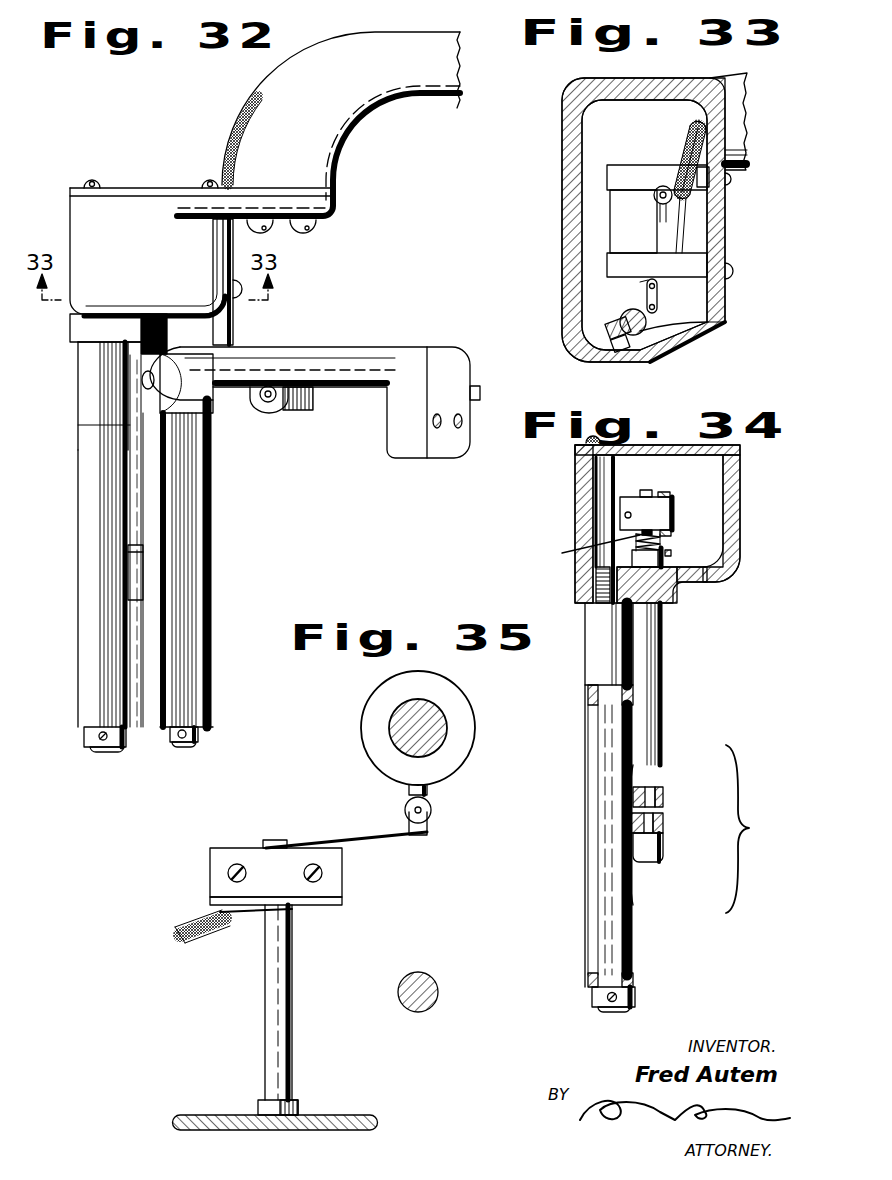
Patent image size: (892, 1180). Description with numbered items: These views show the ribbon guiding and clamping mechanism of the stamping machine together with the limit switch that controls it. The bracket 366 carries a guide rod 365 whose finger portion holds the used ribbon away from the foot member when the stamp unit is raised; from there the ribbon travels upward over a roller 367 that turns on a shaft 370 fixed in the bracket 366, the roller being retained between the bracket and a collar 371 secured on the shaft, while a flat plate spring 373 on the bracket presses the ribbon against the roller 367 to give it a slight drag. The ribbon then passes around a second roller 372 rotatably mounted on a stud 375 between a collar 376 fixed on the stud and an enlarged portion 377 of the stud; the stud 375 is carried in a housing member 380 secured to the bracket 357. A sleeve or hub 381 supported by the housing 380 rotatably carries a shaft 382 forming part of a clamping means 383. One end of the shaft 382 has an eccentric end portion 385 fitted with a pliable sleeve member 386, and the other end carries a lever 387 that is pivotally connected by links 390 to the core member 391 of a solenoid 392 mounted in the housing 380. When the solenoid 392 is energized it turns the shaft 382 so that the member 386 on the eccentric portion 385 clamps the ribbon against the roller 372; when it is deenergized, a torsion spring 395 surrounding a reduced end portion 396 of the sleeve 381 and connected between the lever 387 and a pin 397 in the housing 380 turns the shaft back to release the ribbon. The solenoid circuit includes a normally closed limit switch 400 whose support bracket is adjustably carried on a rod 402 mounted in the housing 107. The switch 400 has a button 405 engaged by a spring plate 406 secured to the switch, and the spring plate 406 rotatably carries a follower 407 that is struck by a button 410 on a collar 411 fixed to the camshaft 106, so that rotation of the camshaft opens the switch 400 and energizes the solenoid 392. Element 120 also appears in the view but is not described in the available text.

In FIG. 32, the bracket 357 is at (410, 96).
In FIG. 32, the housing member 380 is at (223, 308).
In FIG. 33, the housing member 380 is at (562, 176).
In FIG. 34, the housing member 380 is at (742, 537).
In FIG. 32, the bracket 366 is at (410, 350).
In FIG. 32, the guide rod 365 is at (349, 400).
In FIG. 32, the roller 367 is at (215, 587).
In FIG. 32, the enlarged portion of the stud 377 is at (90, 398).
In FIG. 34, the enlarged portion of the stud 377 is at (590, 673).
In FIG. 32, the roller 372 is at (88, 658).
In FIG. 34, the roller 372 is at (588, 888).
In FIG. 32, the sleeve or hub 381 is at (136, 497).
In FIG. 33, the sleeve or hub 381 is at (640, 335).
In FIG. 34, the sleeve or hub 381 is at (665, 726).
In FIG. 32, the sleeve member 386 is at (135, 568).
In FIG. 34, the sleeve member 386 is at (665, 850).
In FIG. 32, the collar 376 is at (90, 735).
In FIG. 34, the collar 376 is at (640, 997).
In FIG. 32, the stud 375 is at (98, 750).
In FIG. 34, the stud 375 is at (638, 900).
In FIG. 32, the flat plate spring 373 is at (153, 722).
In FIG. 32, the collar 371 is at (200, 735).
In FIG. 32, the shaft 370 is at (185, 745).
In FIG. 33, the solenoid 392 is at (617, 223).
In FIG. 33, the links 390 is at (660, 292).
In FIG. 34, the links 390 is at (670, 492).
In FIG. 33, the core member 391 is at (642, 288).
In FIG. 33, the lever 387 is at (658, 320).
In FIG. 34, the lever 387 is at (632, 497).
In FIG. 33, the shaft 382 is at (652, 340).
In FIG. 34, the shaft 382 is at (665, 796).
In FIG. 33, the torsion spring 395 is at (678, 335).
In FIG. 34, the torsion spring 395 is at (581, 549).
In FIG. 33, the pin 397 is at (706, 333).
In FIG. 34, the pin 397 is at (667, 558).
In FIG. 34, the reduced end portion 396 is at (664, 548).
In FIG. 34, the eccentric end portion 385 is at (665, 820).
In FIG. 34, the clamping means 383 is at (758, 829).
In FIG. 35, the collar 411 is at (475, 745).
In FIG. 35, the camshaft 106 is at (446, 722).
In FIG. 35, the button 410 is at (428, 789).
In FIG. 35, the follower 407 is at (432, 813).
In FIG. 35, the spring plate 406 is at (366, 840).
In FIG. 35, the button 405 is at (298, 830).
In FIG. 35, the limit switch 400 is at (343, 878).
In FIG. 35, the rod 402 is at (292, 1012).
In FIG. 35, the housing 107 is at (347, 1113).
In FIG. 35, the rod 120 is at (412, 974).